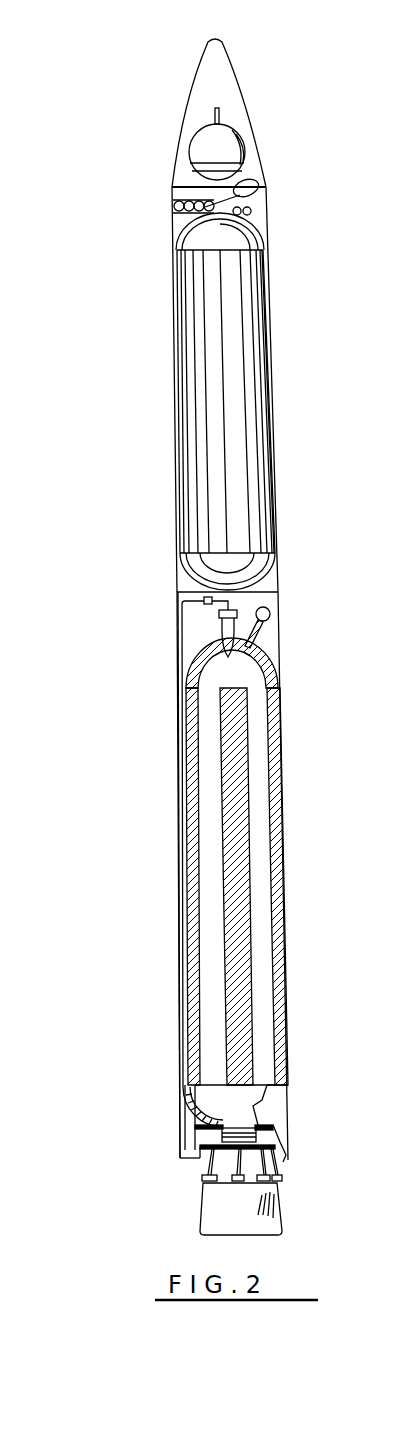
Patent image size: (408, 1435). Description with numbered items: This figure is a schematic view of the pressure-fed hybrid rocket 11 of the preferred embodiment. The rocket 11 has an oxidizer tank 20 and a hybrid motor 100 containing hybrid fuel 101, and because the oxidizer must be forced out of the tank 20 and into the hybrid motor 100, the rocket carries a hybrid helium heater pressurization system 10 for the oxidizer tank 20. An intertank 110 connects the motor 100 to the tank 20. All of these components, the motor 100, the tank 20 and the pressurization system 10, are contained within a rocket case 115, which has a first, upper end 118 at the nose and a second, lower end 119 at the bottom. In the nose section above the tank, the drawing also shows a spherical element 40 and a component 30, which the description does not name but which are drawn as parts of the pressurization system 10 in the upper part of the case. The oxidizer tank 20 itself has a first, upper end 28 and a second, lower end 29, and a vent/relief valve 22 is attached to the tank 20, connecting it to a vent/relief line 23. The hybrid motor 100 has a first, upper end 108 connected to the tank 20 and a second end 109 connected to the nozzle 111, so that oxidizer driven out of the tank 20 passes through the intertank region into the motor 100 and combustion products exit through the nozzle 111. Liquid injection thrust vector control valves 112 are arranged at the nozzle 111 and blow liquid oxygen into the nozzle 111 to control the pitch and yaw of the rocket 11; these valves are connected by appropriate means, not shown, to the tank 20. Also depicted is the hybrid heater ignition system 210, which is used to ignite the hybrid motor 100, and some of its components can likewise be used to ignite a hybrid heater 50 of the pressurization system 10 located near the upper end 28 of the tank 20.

The hybrid helium heater pressurization system 10 is at (171, 300).
The pressure-fed hybrid rocket 11 is at (138, 378).
The oxidizer tank 20 is at (257, 302).
The vent/relief valve 22 is at (210, 610).
The vent/relief line 23 is at (178, 902).
The first, upper end 28 is at (252, 222).
The second, lower end 29 is at (180, 572).
The pressure regulator 30 is at (258, 188).
The pressurant sphere 40 is at (236, 140).
The hybrid heater 50 is at (183, 215).
The hybrid motor 100 is at (186, 770).
The hybrid fuel 101 is at (279, 737).
The first, upper end 108 is at (200, 645).
The second end 109 is at (200, 1122).
The intertank 110 is at (274, 600).
The nozzle 111 is at (278, 1203).
The liquid injection thrust vector control valves 112 is at (233, 1162).
The rocket case 115 is at (275, 418).
The first, upper end 118 is at (214, 40).
The second, lower end 119 is at (278, 1160).
The hybrid heater ignition system 210 is at (271, 618).